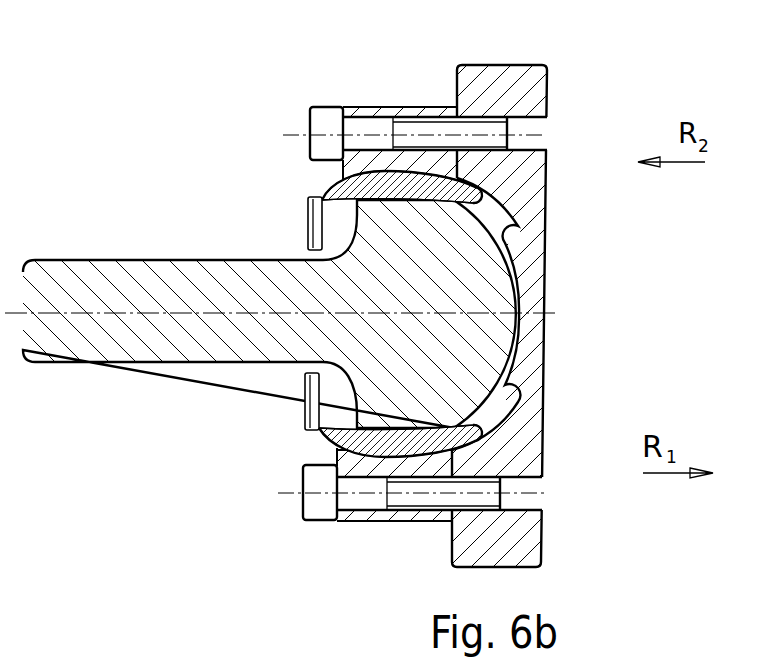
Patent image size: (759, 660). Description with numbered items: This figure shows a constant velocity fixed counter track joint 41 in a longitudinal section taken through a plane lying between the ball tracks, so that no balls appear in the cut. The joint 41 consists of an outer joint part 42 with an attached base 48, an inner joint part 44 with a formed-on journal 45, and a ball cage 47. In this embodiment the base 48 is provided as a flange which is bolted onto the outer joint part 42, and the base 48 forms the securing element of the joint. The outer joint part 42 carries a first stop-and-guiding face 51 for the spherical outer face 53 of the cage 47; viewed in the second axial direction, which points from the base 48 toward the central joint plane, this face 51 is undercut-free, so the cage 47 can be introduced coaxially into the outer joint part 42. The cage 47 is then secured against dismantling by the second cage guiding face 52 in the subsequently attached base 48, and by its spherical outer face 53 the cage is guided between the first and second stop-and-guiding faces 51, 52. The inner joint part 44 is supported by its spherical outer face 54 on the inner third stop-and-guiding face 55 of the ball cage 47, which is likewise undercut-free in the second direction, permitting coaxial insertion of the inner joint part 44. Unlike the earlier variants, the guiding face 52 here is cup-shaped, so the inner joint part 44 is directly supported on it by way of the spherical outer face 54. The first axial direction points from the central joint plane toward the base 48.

The joint 41 is at (333, 55).
The outer joint part 42 is at (410, 113).
The inner joint part 44 is at (370, 235).
The journal 45 is at (105, 270).
The ball cage 47 is at (347, 428).
The base 48 is at (542, 93).
The first stop-and-guiding face 51 is at (333, 187).
The second cage guiding face 52 is at (517, 280).
The spherical outer face 53 is at (390, 173).
The spherical outer face 54 is at (515, 348).
The third stop-and-guiding face 55 is at (357, 420).